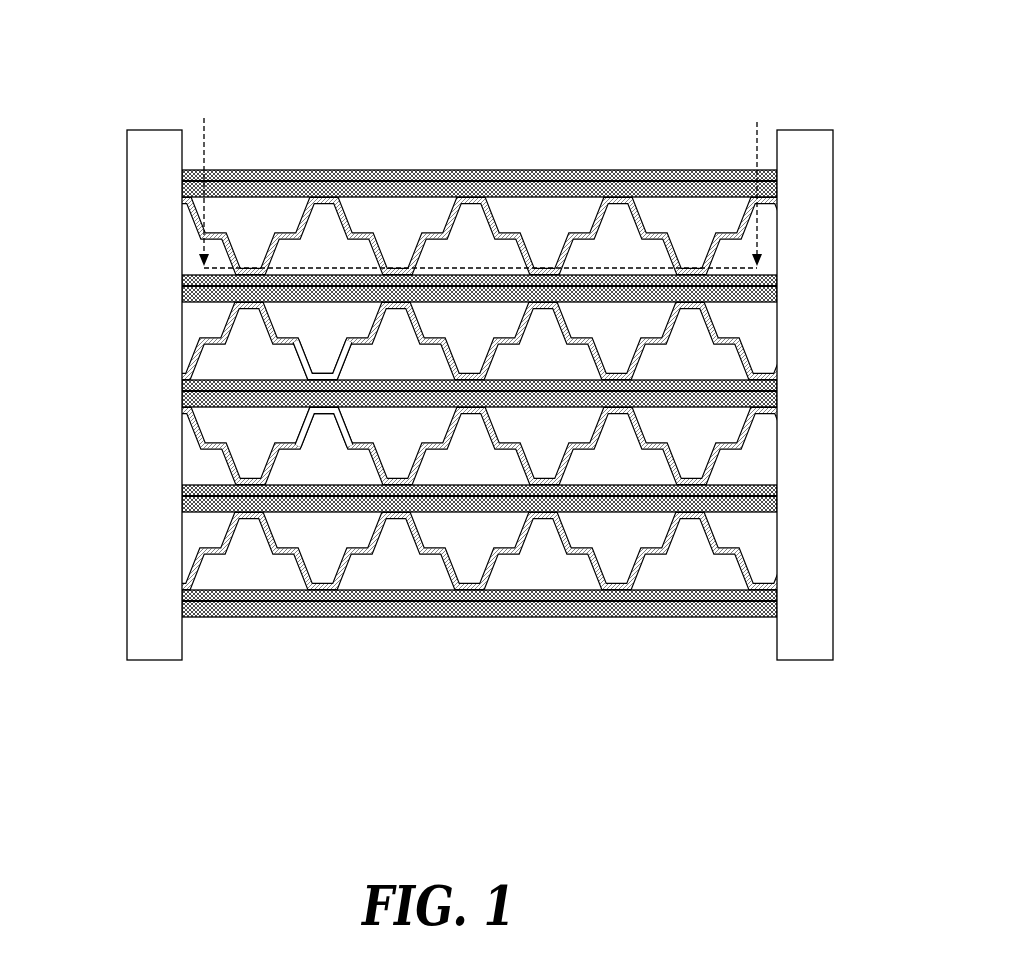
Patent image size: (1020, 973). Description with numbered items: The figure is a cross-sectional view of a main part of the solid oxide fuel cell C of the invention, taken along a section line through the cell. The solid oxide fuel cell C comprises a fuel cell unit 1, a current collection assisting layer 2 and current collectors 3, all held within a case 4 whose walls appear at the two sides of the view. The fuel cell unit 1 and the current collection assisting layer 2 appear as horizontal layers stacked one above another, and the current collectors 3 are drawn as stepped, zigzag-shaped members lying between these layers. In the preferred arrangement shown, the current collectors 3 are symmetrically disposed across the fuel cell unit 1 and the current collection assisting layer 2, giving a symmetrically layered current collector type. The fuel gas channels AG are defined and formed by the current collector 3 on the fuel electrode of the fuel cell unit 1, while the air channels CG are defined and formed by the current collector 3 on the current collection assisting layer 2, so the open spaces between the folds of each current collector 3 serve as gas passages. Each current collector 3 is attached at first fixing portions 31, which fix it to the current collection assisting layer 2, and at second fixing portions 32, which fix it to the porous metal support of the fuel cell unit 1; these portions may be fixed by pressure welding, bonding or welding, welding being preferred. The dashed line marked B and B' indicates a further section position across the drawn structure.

The fuel cell unit 1 is at (777, 397).
The current collection assisting layer 2 is at (777, 380).
The current collector 3 is at (757, 349).
The first fixing portion 31 is at (303, 377).
The second fixing portion 32 is at (303, 408).
The case 4 is at (808, 185).
The air channel CG is at (248, 357).
The fuel gas channel AG is at (242, 446).
The section line B is at (478, 174).
The section line B' is at (762, 179).
The solid oxide fuel cell C is at (73, 36).